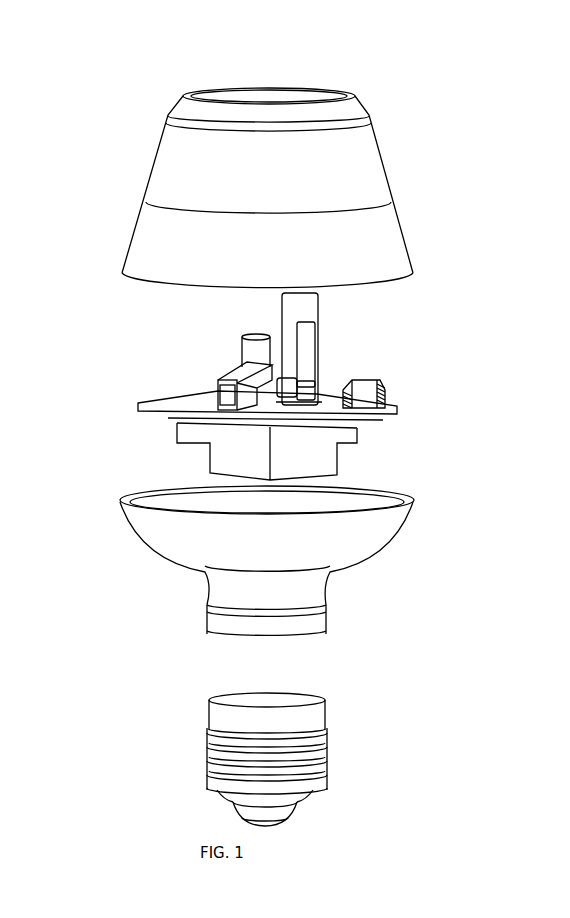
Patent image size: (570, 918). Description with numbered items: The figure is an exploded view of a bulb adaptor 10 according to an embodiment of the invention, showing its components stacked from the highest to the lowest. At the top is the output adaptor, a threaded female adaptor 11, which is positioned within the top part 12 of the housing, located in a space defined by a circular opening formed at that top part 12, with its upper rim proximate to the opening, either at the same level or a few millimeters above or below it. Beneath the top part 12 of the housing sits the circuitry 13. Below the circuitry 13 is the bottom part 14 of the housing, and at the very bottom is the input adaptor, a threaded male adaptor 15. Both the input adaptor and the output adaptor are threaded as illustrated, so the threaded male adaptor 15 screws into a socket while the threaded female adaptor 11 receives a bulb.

The bulb adaptor 10 is at (32, 844).
The threaded female adaptor 11 is at (202, 90).
The top part of housing 12 is at (278, 242).
The circuitry 13 is at (320, 407).
The bottom part of housing 14 is at (323, 538).
The threaded male adaptor 15 is at (268, 720).